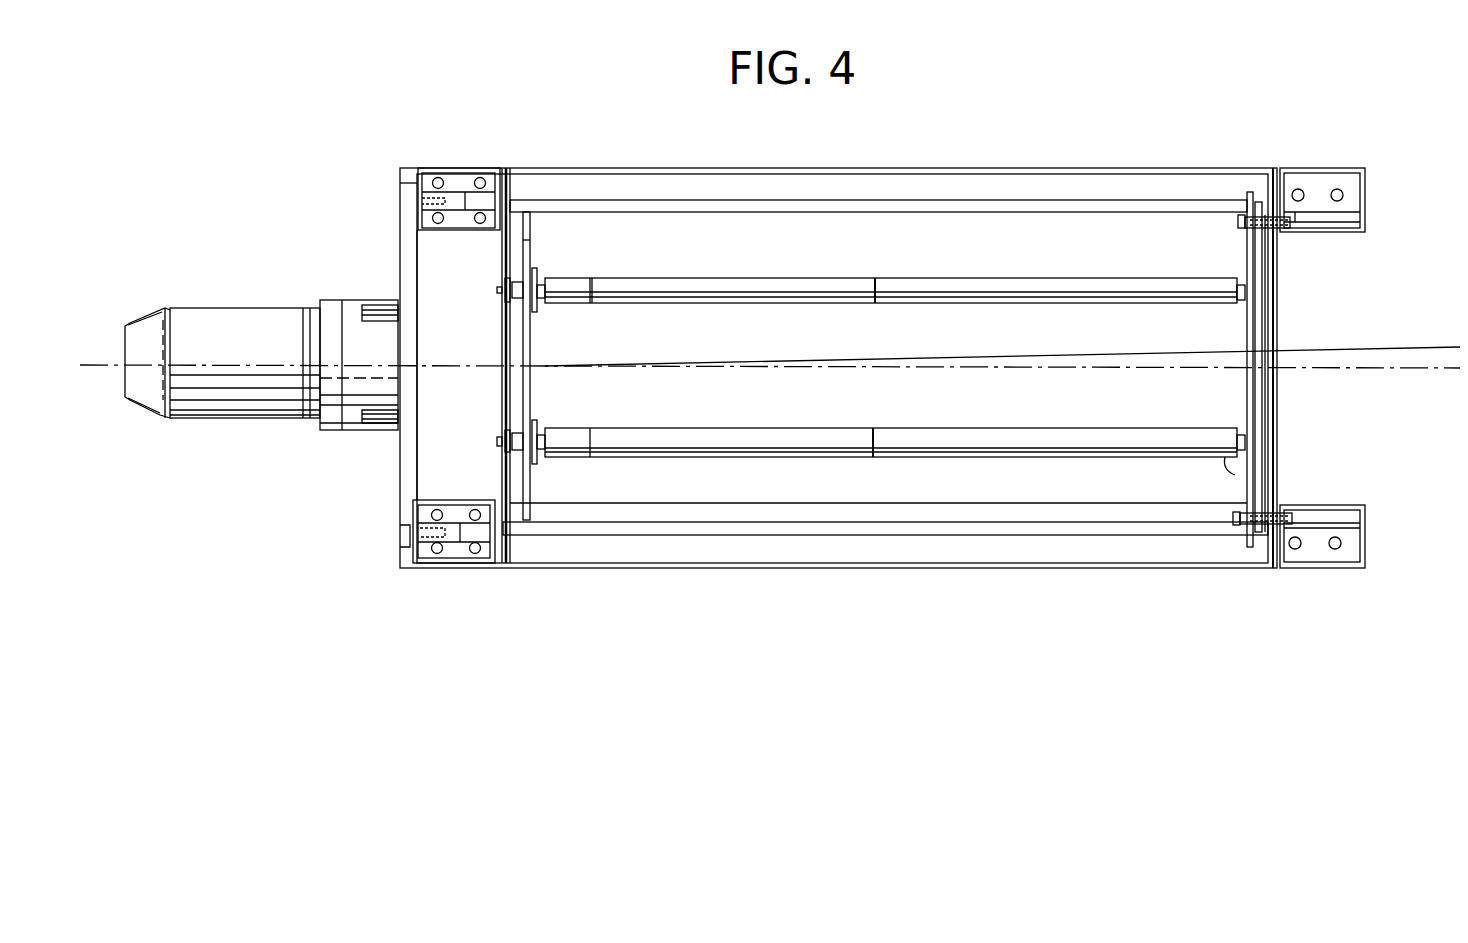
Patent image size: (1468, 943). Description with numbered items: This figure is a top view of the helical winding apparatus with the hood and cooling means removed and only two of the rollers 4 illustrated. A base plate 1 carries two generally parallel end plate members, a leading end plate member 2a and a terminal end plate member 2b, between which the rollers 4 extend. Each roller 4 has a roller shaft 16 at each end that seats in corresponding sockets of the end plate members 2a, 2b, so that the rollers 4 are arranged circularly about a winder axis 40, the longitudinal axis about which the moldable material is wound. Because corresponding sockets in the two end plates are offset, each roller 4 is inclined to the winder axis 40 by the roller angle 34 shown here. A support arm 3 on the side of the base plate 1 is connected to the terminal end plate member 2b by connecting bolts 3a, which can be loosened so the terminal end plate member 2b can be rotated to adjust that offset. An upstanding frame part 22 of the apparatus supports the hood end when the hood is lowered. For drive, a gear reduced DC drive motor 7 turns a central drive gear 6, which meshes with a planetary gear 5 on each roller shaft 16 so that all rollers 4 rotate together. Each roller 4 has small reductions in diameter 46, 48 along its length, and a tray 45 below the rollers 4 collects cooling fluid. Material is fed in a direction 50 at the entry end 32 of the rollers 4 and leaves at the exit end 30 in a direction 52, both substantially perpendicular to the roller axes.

The base plate 1 is at (991, 560).
The leading end plate member 2a is at (528, 460).
The terminal end plate member 2b is at (1262, 325).
The support arm 3 is at (1274, 229).
The connecting bolt 3a is at (405, 476).
The roller 4 is at (745, 285).
The planetary gear 5 is at (505, 437).
The central drive gear 6 is at (517, 342).
The drive motor 7 is at (227, 419).
The roller shaft 16 is at (1240, 440).
The upstanding frame part 22 is at (1263, 277).
The exit end 30 is at (1225, 460).
The entry end 32 is at (570, 455).
The roller angle 34 is at (1440, 413).
The winder axis 40 is at (1380, 370).
The tray 45 is at (1120, 205).
The reduction in diameter 46 is at (596, 280).
The reduction in diameter 48 is at (878, 283).
The feed direction 50 is at (577, 328).
The exit direction 52 is at (1203, 410).